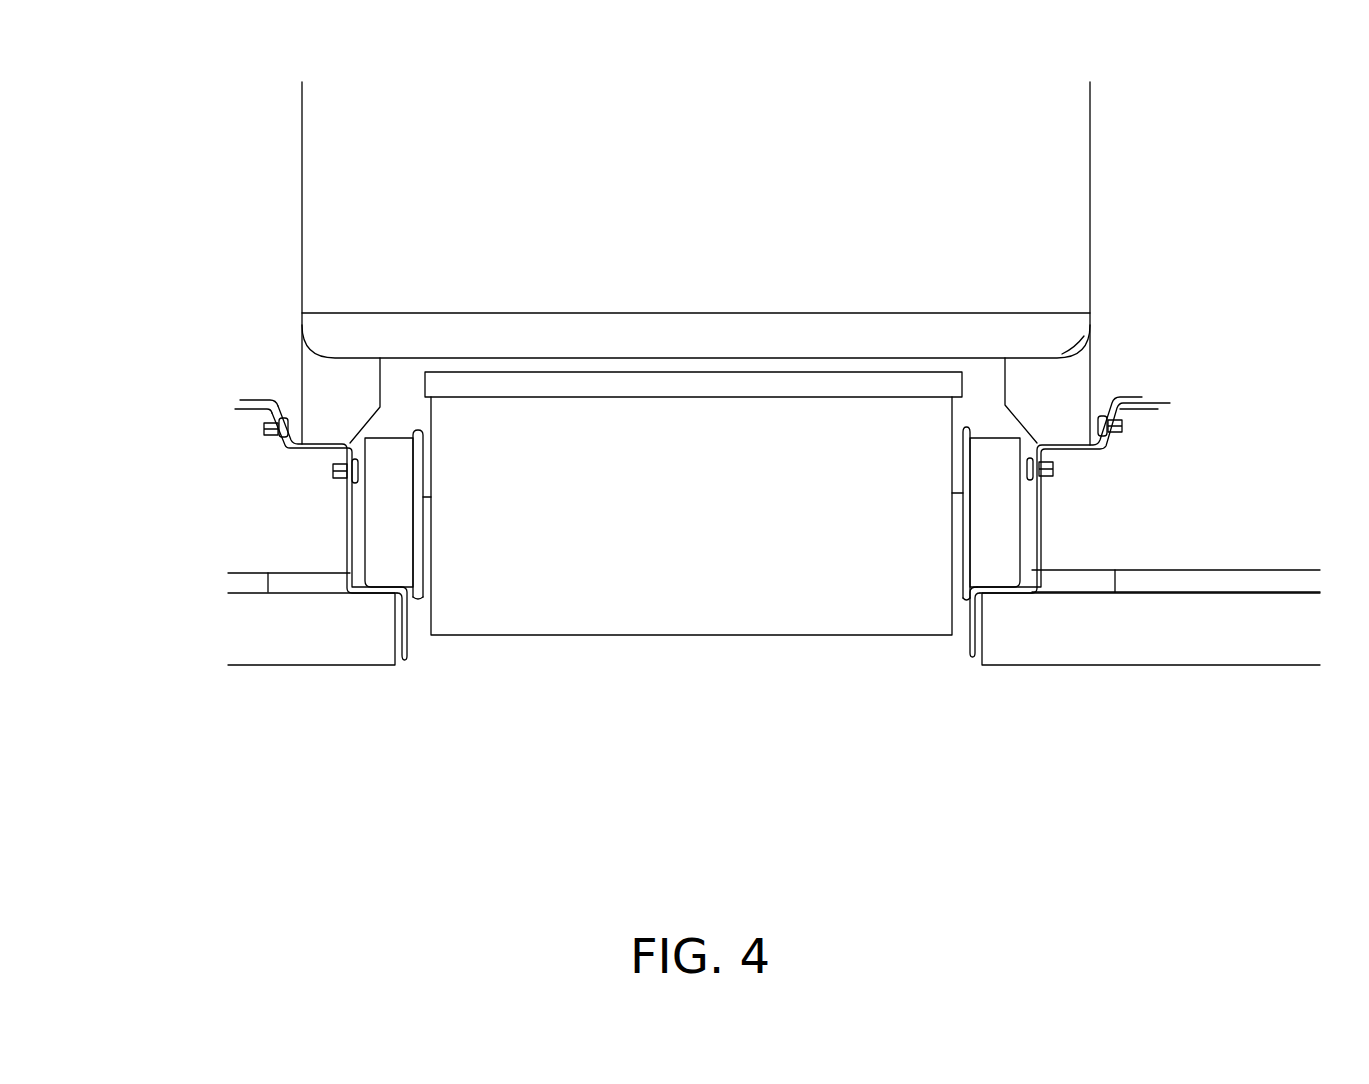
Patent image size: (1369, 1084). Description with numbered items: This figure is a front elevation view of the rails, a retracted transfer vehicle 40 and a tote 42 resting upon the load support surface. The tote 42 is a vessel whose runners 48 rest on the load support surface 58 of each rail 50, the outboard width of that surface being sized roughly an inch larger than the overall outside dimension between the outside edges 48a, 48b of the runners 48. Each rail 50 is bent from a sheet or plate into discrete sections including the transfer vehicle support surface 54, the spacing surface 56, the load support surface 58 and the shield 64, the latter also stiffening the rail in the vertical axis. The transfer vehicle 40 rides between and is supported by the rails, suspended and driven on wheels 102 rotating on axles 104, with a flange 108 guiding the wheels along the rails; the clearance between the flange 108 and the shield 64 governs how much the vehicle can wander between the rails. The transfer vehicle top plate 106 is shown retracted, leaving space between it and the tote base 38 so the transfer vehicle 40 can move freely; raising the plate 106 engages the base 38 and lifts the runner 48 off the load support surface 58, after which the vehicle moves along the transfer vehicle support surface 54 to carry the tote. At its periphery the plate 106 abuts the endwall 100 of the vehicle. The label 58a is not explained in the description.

The tote base 38 is at (662, 357).
The transfer vehicle 40 is at (691, 590).
The tote 42 is at (983, 233).
The runner 48 is at (1047, 387).
The outside edge of runner 48a is at (1072, 352).
The outside edge of runner 48b is at (301, 368).
The rail 50 is at (1142, 397).
The transfer vehicle support surface 54 is at (377, 588).
The spacing surface 56 is at (347, 505).
The load support surface 58 is at (322, 448).
The bracket upper flange 58a is at (273, 398).
The shield 64 is at (408, 657).
The endwall 100 is at (618, 540).
The wheel 102 is at (993, 568).
The axle 104 is at (427, 513).
The transfer vehicle top plate 106 is at (575, 392).
The flange 108 is at (418, 430).